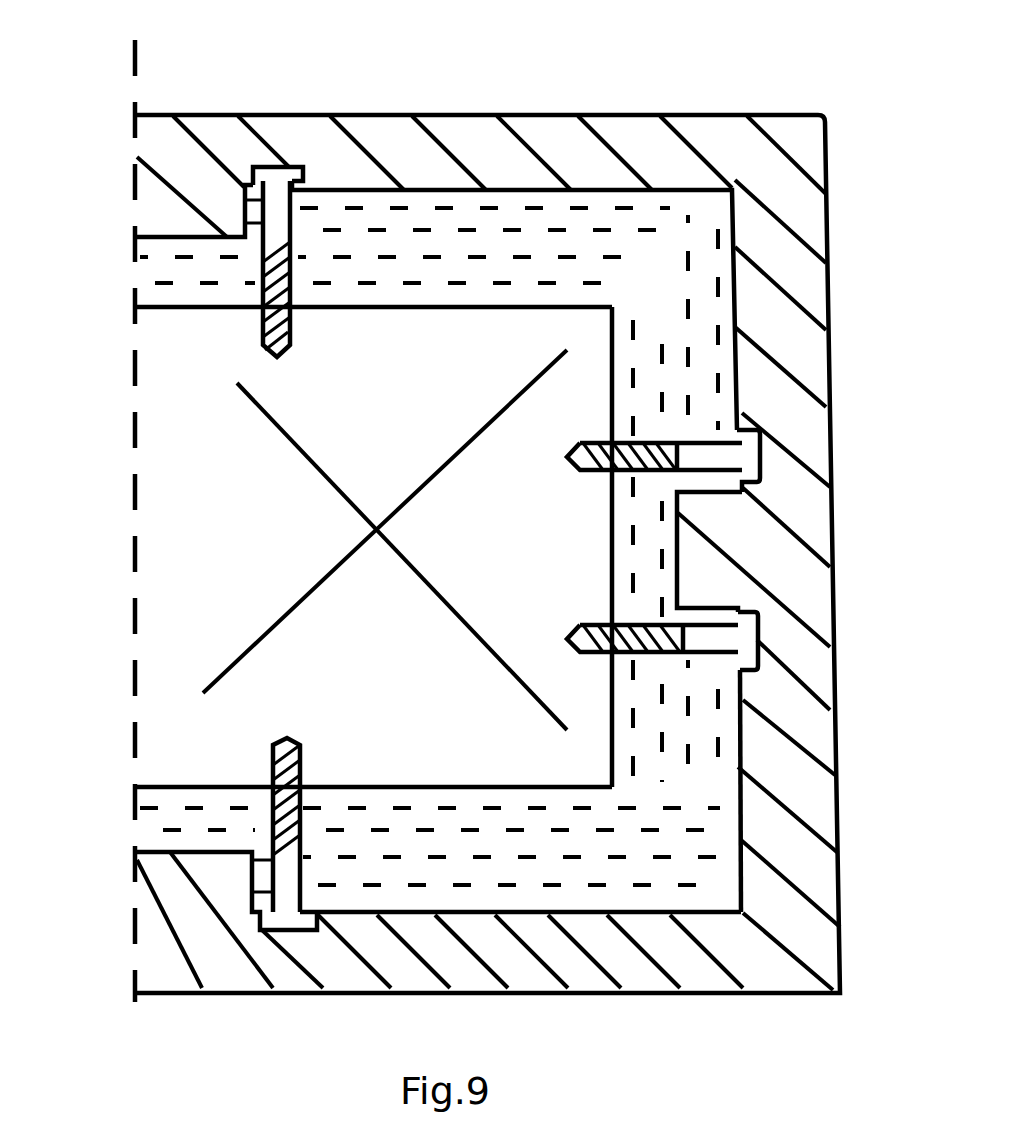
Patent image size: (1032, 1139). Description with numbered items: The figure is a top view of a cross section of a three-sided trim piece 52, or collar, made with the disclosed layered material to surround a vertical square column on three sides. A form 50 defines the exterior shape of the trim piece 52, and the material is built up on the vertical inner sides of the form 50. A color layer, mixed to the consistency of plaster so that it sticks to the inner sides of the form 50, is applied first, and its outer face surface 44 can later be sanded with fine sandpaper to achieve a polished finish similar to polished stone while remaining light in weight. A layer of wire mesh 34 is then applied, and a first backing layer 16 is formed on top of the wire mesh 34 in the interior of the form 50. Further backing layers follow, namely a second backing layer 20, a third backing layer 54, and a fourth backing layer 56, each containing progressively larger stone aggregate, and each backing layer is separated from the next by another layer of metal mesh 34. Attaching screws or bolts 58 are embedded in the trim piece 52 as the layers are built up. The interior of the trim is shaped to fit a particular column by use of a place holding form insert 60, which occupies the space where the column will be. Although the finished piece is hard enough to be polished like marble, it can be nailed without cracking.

The first backing layer 16 is at (625, 223).
The second backing layer 20 is at (333, 245).
The wire mesh 34 is at (718, 792).
The face surface 44 is at (732, 235).
The form 50 is at (310, 135).
The trim piece 52 is at (452, 215).
The third backing layer 54 is at (392, 273).
The fourth backing layer 56 is at (463, 290).
The attaching screws or bolts 58 is at (573, 630).
The place holding form insert 60 is at (200, 585).